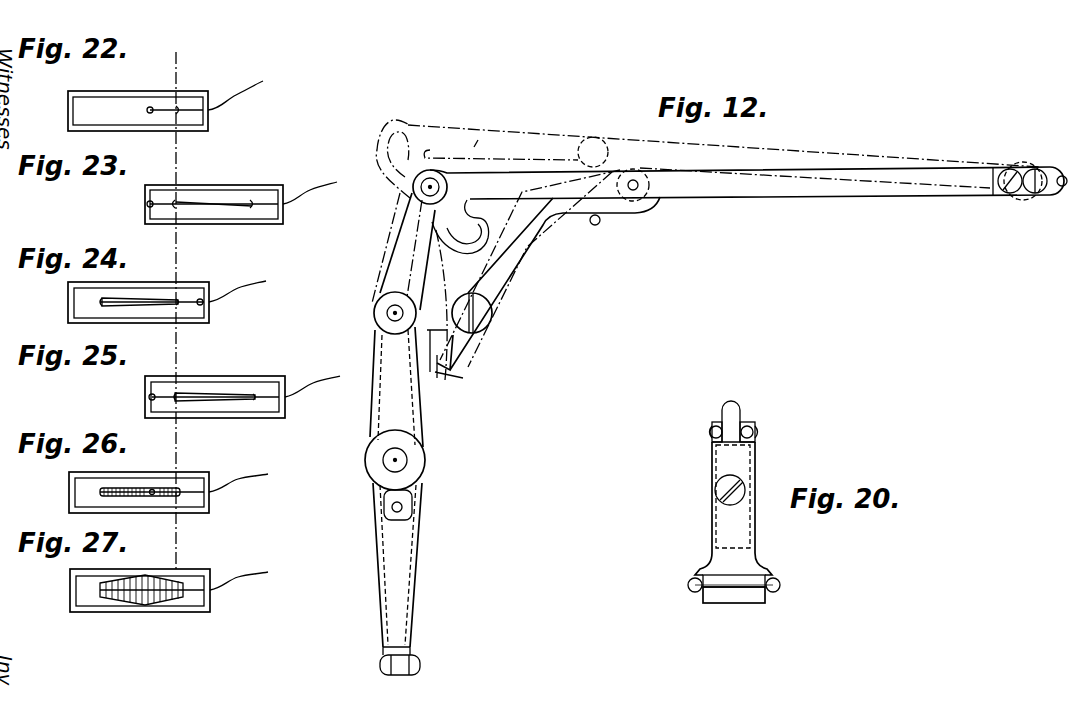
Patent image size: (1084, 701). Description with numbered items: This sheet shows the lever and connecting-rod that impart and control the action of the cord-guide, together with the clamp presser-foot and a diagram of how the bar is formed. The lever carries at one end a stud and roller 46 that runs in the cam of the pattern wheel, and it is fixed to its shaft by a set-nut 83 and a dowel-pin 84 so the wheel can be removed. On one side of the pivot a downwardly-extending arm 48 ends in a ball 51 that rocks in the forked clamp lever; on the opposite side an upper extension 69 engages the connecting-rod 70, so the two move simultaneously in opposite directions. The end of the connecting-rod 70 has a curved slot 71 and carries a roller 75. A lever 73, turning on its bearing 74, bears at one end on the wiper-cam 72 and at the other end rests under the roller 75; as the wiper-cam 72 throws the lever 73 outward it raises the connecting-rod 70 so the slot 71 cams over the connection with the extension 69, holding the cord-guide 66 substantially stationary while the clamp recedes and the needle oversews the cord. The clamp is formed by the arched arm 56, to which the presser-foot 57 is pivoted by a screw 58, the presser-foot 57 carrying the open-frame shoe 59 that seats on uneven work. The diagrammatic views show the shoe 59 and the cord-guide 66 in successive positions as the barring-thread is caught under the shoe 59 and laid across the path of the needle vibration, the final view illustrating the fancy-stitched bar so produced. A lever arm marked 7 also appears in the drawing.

In FIG. 12, the arm 7 is at (535, 252).
In FIG. 12, the stud and roller 46 is at (387, 313).
In FIG. 12, the downwardly-extending arm 48 is at (410, 574).
In FIG. 12, the ball 51 is at (421, 664).
In FIG. 20, the arm 56 is at (751, 419).
In FIG. 20, the presser-foot 57 is at (725, 515).
In FIG. 20, the screw 58 is at (721, 487).
In FIG. 22, the shoe 59 is at (87, 92).
In FIG. 23, the shoe 59 is at (244, 224).
In FIG. 24, the shoe 59 is at (113, 322).
In FIG. 25, the shoe 59 is at (244, 418).
In FIG. 26, the shoe 59 is at (110, 512).
In FIG. 20, the shoe 59 is at (733, 599).
In FIG. 22, the cord-guide 66 is at (150, 107).
In FIG. 23, the cord-guide 66 is at (147, 204).
In FIG. 24, the cord-guide 66 is at (205, 300).
In FIG. 25, the cord-guide 66 is at (149, 397).
In FIG. 26, the cord-guide 66 is at (154, 489).
In FIG. 12, the upper extension 69 is at (410, 230).
In FIG. 12, the connecting-rod 70 is at (794, 172).
In FIG. 12, the curved slot 71 is at (516, 202).
In FIG. 12, the wiper-cam 72 is at (437, 262).
In FIG. 12, the lever 73 is at (447, 380).
In FIG. 12, the bearing 74 is at (492, 314).
In FIG. 12, the roller 75 is at (648, 170).
In FIG. 12, the set-nut 83 is at (420, 460).
In FIG. 12, the dowel-pin 84 is at (405, 507).